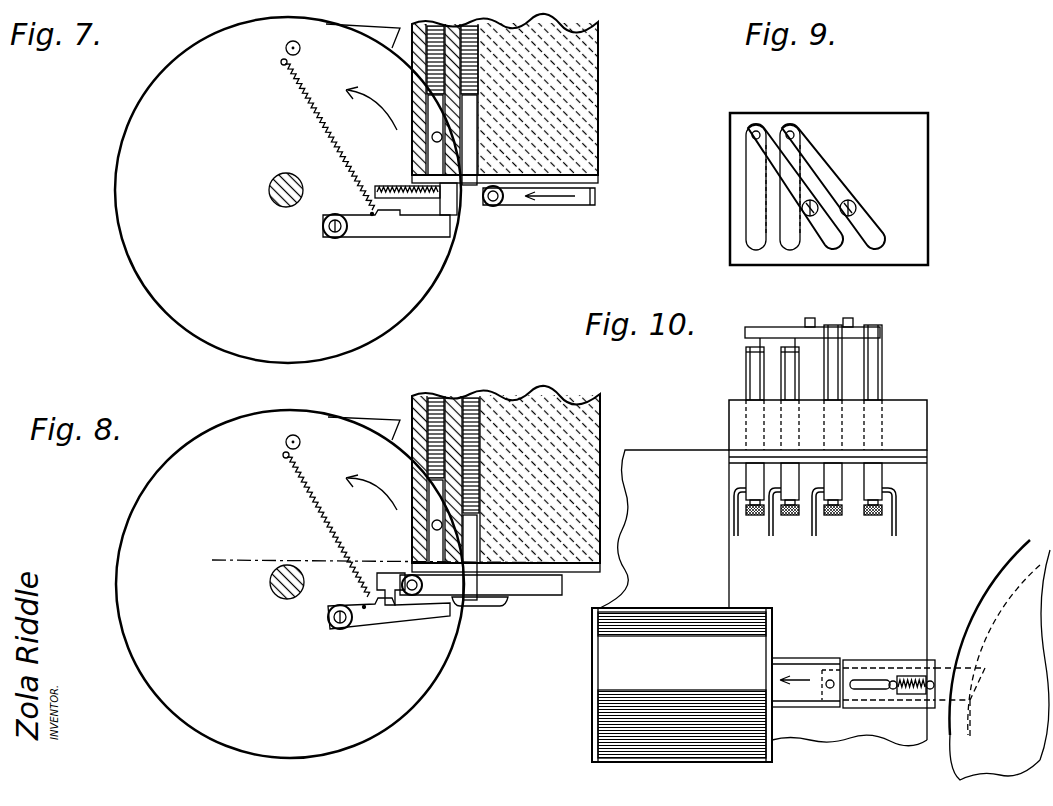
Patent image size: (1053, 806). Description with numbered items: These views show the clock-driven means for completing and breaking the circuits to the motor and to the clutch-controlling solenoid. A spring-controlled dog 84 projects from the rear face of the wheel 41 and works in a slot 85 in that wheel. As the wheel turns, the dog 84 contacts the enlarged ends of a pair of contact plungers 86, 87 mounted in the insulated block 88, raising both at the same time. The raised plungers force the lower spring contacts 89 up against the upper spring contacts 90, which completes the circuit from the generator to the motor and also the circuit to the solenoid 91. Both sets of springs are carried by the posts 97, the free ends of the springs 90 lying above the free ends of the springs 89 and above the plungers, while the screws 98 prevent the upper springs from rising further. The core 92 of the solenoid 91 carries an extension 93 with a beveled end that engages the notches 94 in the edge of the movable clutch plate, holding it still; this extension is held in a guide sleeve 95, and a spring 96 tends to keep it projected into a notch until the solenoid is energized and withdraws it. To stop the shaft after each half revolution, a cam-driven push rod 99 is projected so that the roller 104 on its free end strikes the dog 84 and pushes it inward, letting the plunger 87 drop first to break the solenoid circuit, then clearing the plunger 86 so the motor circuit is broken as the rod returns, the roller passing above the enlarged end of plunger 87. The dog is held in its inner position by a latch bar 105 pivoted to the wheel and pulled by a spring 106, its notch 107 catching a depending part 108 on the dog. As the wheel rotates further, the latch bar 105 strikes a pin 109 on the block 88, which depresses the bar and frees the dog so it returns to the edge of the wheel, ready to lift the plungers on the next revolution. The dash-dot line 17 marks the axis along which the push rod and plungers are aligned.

In FIG. 8, the axis line 17 is at (397, 563).
In FIG. 7, the wheel 41 is at (288, 190).
In FIG. 8, the wheel 41 is at (290, 584).
In FIG. 7, the spring-controlled dog 84 is at (457, 212).
In FIG. 8, the spring-controlled dog 84 is at (388, 573).
In FIG. 7, the slot 85 is at (382, 186).
In FIG. 7, the contact plunger 86 is at (433, 113).
In FIG. 8, the contact plunger 86 is at (397, 521).
In FIG. 7, the contact plunger 87 is at (468, 146).
In FIG. 8, the contact plunger 87 is at (474, 600).
In FIG. 8, the insulated block 88 is at (602, 446).
In FIG. 9, the spring contacts 89 is at (785, 202).
In FIG. 10, the spring contacts 89 is at (788, 357).
In FIG. 9, the spring contacts 90 is at (822, 175).
In FIG. 10, the spring contacts 90 is at (779, 327).
In FIG. 10, the solenoid 91 is at (605, 680).
In FIG. 10, the core 92 is at (810, 664).
In FIG. 10, the extension 93 is at (950, 660).
In FIG. 10, the notches 94 is at (975, 668).
In FIG. 10, the guide sleeve 95 is at (890, 660).
In FIG. 10, the spring 96 is at (907, 695).
In FIG. 9, the posts 97 is at (880, 252).
In FIG. 10, the posts 97 is at (887, 380).
In FIG. 9, the screws 98 is at (856, 207).
In FIG. 10, the screws 98 is at (850, 318).
In FIG. 7, the push rod 99 is at (590, 207).
In FIG. 8, the push rod 99 is at (548, 596).
In FIG. 7, the roller 104 is at (500, 205).
In FIG. 8, the roller 104 is at (412, 585).
In FIG. 7, the latch bar 105 is at (418, 238).
In FIG. 8, the latch bar 105 is at (415, 618).
In FIG. 8, the spring 106 is at (315, 512).
In FIG. 7, the notch 107 is at (382, 226).
In FIG. 8, the notch 107 is at (360, 625).
In FIG. 8, the depending part 108 is at (368, 592).
In FIG. 8, the pin 109 is at (432, 525).